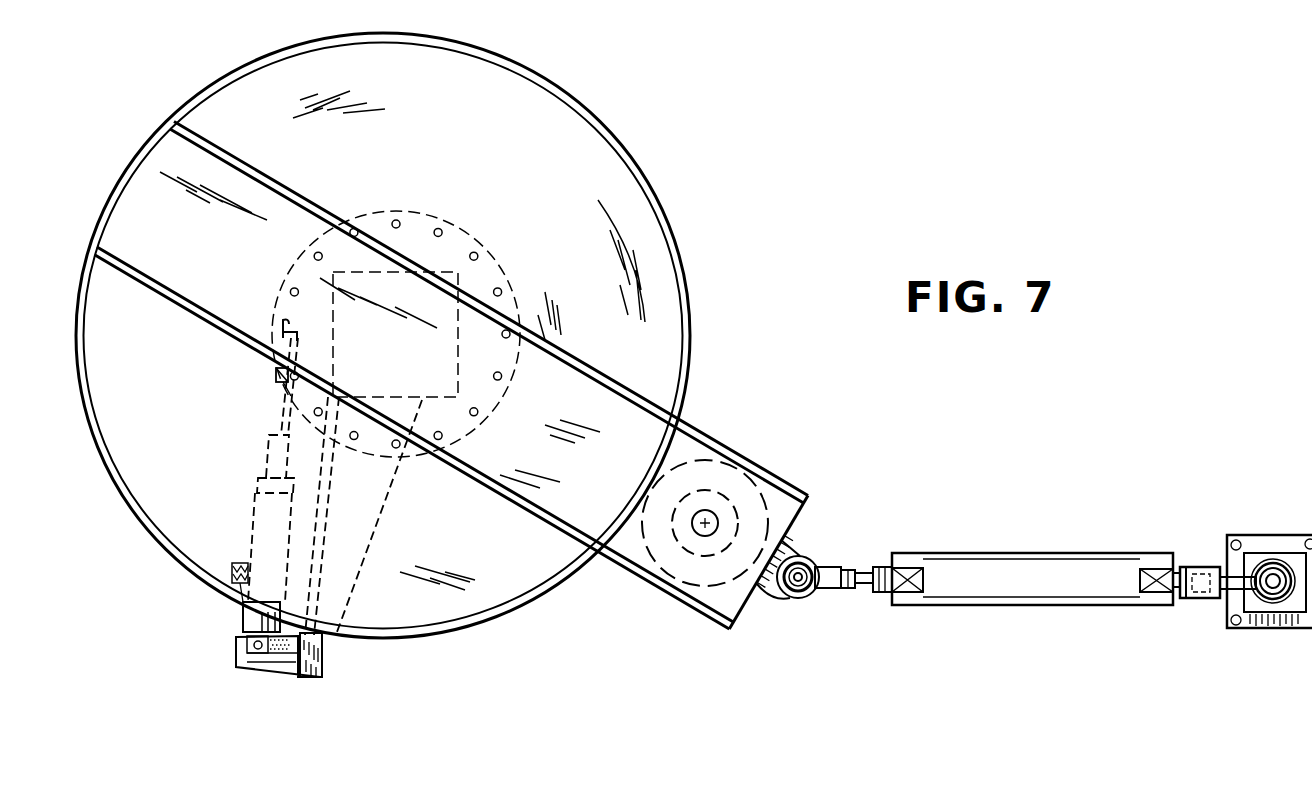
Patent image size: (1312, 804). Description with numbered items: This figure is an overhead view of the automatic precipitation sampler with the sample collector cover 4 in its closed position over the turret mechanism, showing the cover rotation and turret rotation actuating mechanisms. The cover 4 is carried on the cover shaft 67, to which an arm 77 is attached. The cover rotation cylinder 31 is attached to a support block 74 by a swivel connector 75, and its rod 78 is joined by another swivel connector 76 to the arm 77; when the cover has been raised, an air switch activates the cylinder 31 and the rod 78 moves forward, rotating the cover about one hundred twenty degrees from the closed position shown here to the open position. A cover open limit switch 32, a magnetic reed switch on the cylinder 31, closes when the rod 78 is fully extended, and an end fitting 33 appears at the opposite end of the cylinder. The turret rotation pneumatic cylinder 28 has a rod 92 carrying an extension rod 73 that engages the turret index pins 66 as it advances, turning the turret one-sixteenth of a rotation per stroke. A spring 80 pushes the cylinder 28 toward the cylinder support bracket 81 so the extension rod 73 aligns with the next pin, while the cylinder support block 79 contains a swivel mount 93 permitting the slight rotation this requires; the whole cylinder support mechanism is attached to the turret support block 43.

The sample collector cover 4 is at (657, 255).
The turret index pins 66 is at (503, 288).
The turret support block 43 is at (462, 414).
The extension rod 73 is at (276, 374).
The rod of cylinder 28 92 is at (272, 464).
The cover shaft 67 is at (657, 561).
The arm 77 is at (784, 598).
The swivel connector 76 is at (832, 586).
The rod of cylinder 31 78 is at (866, 570).
The cover open limit switch 32 is at (903, 598).
The cover rotation cylinder 31 is at (1036, 592).
The cylinder end cap 33 is at (1152, 596).
The swivel connector 75 is at (1262, 572).
The support block 74 is at (1302, 630).
The spring 80 is at (232, 576).
The turret rotation pneumatic cylinder 28 is at (245, 618).
The swivel mount 93 is at (248, 655).
The cylinder support block 79 is at (274, 671).
The cylinder support bracket 81 is at (336, 650).